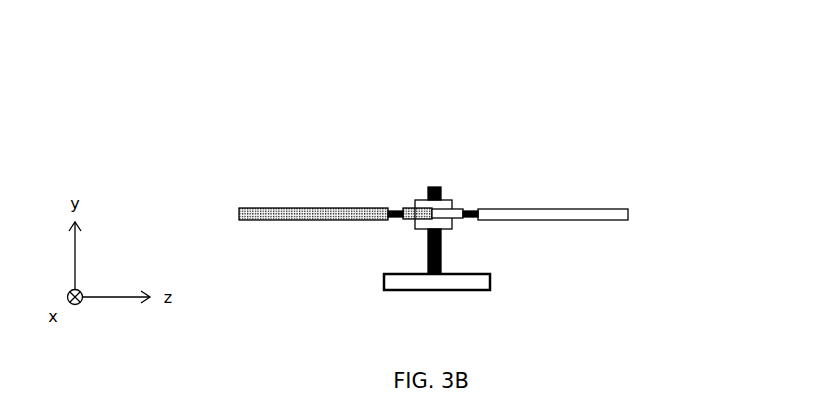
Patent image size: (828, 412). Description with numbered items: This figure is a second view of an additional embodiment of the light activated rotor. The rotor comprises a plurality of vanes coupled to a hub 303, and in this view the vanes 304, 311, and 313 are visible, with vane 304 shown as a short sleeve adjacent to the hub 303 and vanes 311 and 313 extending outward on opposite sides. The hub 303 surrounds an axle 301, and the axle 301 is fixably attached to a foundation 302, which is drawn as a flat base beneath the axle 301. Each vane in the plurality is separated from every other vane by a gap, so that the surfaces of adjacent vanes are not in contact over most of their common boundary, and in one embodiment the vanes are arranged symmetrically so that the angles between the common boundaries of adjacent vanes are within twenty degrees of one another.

The axle 301 is at (440, 247).
The foundation 302 is at (460, 282).
The hub 303 is at (442, 202).
The vane 304 is at (408, 202).
The vane 311 is at (255, 192).
The vane 313 is at (630, 193).